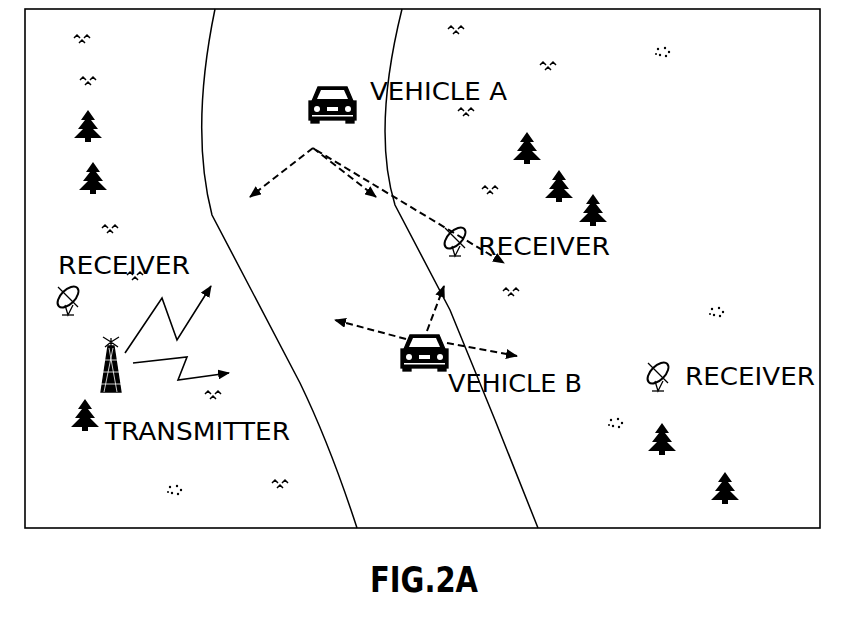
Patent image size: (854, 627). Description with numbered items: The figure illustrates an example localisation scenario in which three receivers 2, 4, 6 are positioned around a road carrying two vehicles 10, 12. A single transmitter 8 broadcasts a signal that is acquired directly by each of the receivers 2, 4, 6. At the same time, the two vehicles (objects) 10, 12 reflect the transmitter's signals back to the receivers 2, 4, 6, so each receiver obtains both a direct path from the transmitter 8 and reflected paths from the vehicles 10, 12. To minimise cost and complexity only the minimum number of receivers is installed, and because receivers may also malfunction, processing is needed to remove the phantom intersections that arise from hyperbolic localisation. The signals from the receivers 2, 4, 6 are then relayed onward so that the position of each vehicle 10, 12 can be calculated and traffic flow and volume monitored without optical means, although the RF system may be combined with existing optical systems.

The receiver 2 is at (63, 286).
The receiver 4 is at (450, 257).
The receiver 6 is at (662, 390).
The transmitter 8 is at (103, 386).
The vehicle 10 is at (325, 85).
The vehicle 12 is at (425, 369).